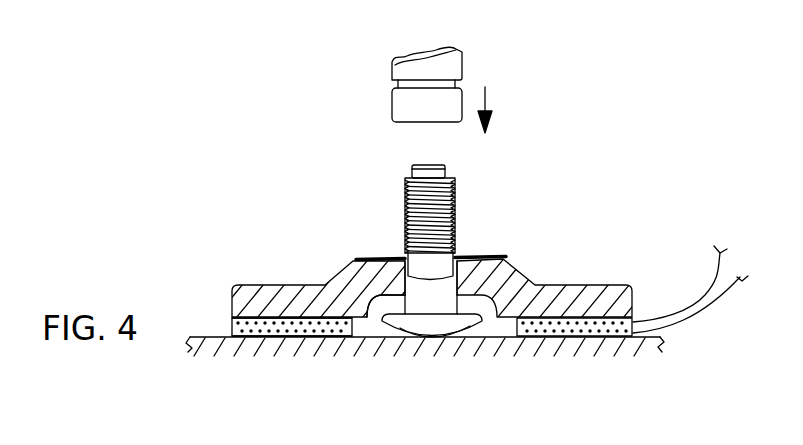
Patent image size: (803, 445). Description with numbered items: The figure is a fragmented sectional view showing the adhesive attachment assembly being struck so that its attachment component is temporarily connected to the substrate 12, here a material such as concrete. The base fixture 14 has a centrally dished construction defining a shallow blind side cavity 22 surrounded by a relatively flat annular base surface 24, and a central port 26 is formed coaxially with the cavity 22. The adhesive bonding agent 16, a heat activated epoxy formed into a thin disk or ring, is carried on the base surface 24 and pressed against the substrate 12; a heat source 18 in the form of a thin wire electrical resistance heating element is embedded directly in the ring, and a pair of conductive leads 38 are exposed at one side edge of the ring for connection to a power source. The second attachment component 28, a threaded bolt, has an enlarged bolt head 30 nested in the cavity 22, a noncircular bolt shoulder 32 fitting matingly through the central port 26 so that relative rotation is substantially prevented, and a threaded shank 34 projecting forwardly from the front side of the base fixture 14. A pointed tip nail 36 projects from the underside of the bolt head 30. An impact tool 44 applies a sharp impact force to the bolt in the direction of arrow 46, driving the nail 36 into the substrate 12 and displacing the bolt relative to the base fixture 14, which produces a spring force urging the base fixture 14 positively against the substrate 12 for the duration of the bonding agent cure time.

The substrate 12 is at (623, 347).
The base fixture 14 is at (560, 275).
The adhesive bonding agent 16 is at (267, 326).
The heat source 18 is at (304, 337).
The cavity 22 is at (368, 324).
The base surface 24 is at (268, 321).
The central port 26 is at (450, 262).
The second attachment component 28 is at (400, 196).
The bolt head 30 is at (408, 325).
The bolt shoulder 32 is at (450, 303).
The threaded shank 34 is at (452, 203).
The nail 36 is at (433, 350).
The conductive leads 38 is at (700, 315).
The impact tool 44 is at (455, 57).
The arrow 46 is at (485, 100).